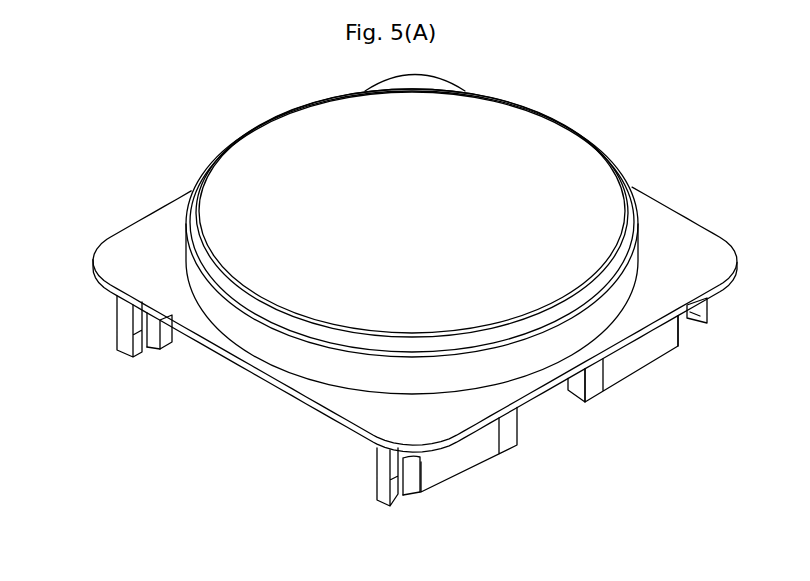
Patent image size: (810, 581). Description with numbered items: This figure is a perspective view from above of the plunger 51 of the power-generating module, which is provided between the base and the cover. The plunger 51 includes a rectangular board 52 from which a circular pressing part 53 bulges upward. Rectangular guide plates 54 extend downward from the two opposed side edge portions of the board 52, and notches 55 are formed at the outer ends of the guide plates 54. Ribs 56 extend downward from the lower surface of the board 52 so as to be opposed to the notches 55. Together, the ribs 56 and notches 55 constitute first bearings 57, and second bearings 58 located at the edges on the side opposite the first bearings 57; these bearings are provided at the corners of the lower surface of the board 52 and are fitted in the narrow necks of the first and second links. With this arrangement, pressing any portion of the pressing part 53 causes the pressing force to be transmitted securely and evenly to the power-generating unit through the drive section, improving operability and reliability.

The plunger 51 is at (146, 217).
The rectangular board 52 is at (692, 247).
The circular pressing part 53 is at (552, 138).
The rectangular guide plate 54 is at (473, 453).
The notch 55 is at (155, 353).
The rib 56 is at (123, 337).
The first bearing 57 is at (690, 328).
The second bearing 58 is at (150, 357).